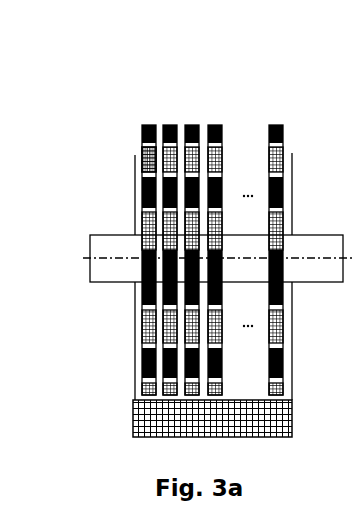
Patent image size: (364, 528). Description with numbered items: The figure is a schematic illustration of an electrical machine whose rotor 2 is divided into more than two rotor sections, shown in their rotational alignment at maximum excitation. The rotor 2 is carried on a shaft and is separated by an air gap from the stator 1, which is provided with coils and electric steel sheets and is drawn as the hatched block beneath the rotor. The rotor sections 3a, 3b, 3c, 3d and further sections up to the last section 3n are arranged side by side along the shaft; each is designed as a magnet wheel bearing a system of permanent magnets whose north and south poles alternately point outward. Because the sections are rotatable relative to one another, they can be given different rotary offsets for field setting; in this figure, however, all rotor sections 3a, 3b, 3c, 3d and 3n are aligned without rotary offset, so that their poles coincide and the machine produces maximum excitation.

The stator 1 is at (143, 439).
The rotor 2 is at (128, 204).
The rotor section 3a is at (147, 125).
The rotor section 3b is at (171, 125).
The rotor section 3c is at (195, 125).
The rotor section 3d is at (215, 125).
The rotor section 3n is at (275, 125).